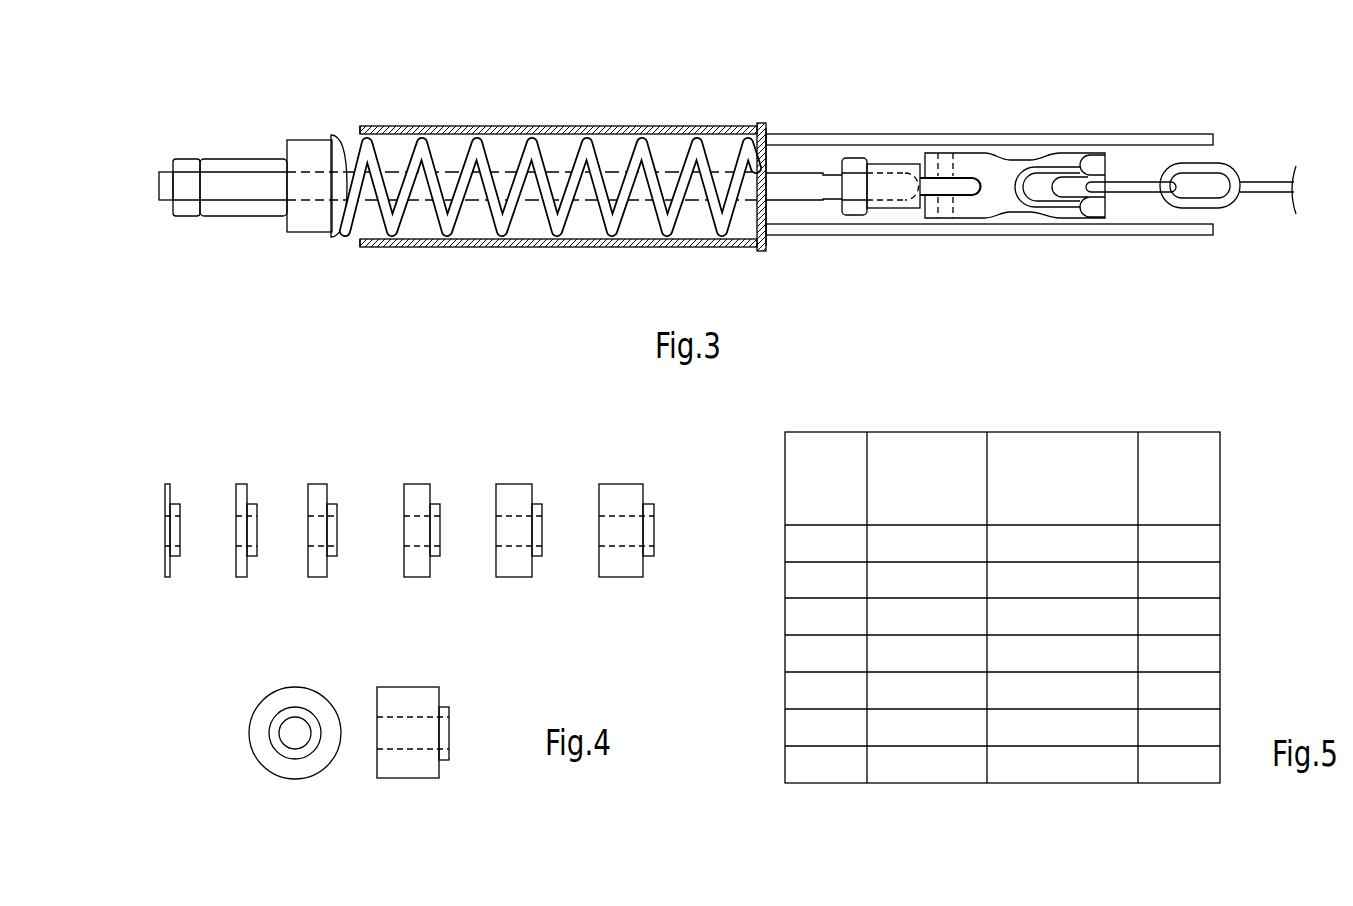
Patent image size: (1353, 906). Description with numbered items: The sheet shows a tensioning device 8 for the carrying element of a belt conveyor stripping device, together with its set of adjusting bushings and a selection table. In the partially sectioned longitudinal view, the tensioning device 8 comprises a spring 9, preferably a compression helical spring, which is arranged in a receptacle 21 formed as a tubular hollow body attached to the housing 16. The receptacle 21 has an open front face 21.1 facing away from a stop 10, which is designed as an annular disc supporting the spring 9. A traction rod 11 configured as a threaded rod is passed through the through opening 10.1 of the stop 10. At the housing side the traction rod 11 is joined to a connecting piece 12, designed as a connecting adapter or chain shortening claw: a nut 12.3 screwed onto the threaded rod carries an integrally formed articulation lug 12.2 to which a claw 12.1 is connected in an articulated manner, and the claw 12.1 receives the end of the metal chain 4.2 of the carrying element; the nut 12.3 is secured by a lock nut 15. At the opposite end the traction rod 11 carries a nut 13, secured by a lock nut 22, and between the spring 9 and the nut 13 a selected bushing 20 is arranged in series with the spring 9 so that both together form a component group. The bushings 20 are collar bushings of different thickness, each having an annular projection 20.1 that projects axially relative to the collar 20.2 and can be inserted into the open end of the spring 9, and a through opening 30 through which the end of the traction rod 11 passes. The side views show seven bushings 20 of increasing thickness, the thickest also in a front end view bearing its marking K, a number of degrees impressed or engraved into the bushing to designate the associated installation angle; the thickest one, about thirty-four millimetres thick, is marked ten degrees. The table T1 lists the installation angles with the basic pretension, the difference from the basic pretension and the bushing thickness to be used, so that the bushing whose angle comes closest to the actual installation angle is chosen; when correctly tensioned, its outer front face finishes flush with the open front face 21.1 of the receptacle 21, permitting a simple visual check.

In FIG. 3, the tensioning device 8 is at (638, 84).
In FIG. 3, the spring 9 is at (470, 137).
In FIG. 3, the stop 10 is at (763, 122).
In FIG. 3, the through opening 10.1 is at (768, 165).
In FIG. 3, the traction rod 11 is at (805, 190).
In FIG. 3, the connecting piece 12 is at (1004, 171).
In FIG. 3, the claw 12.1 is at (1088, 212).
In FIG. 3, the articulation lug 12.2 is at (962, 192).
In FIG. 3, the nut 12.3 is at (893, 167).
In FIG. 3, the nut 13 is at (243, 163).
In FIG. 3, the lock nut 15 is at (853, 211).
In FIG. 3, the housing 16 is at (1174, 140).
In FIG. 3, the bushing 20 is at (308, 150).
In FIG. 4, the bushing 20 is at (164, 490).
In FIG. 4, the annular projection 20.1 is at (651, 509).
In FIG. 4, the collar 20.2 is at (627, 563).
In FIG. 3, the receptacle 21 is at (530, 247).
In FIG. 3, the open front face 21.1 is at (358, 247).
In FIG. 3, the lock nut 22 is at (184, 163).
In FIG. 4, the through opening 30 is at (299, 738).
In FIG. 3, the metal chain 4.2 is at (1232, 165).
In FIG. 4, the marking K is at (301, 674).
In FIG. 5, the table T1 is at (1252, 488).